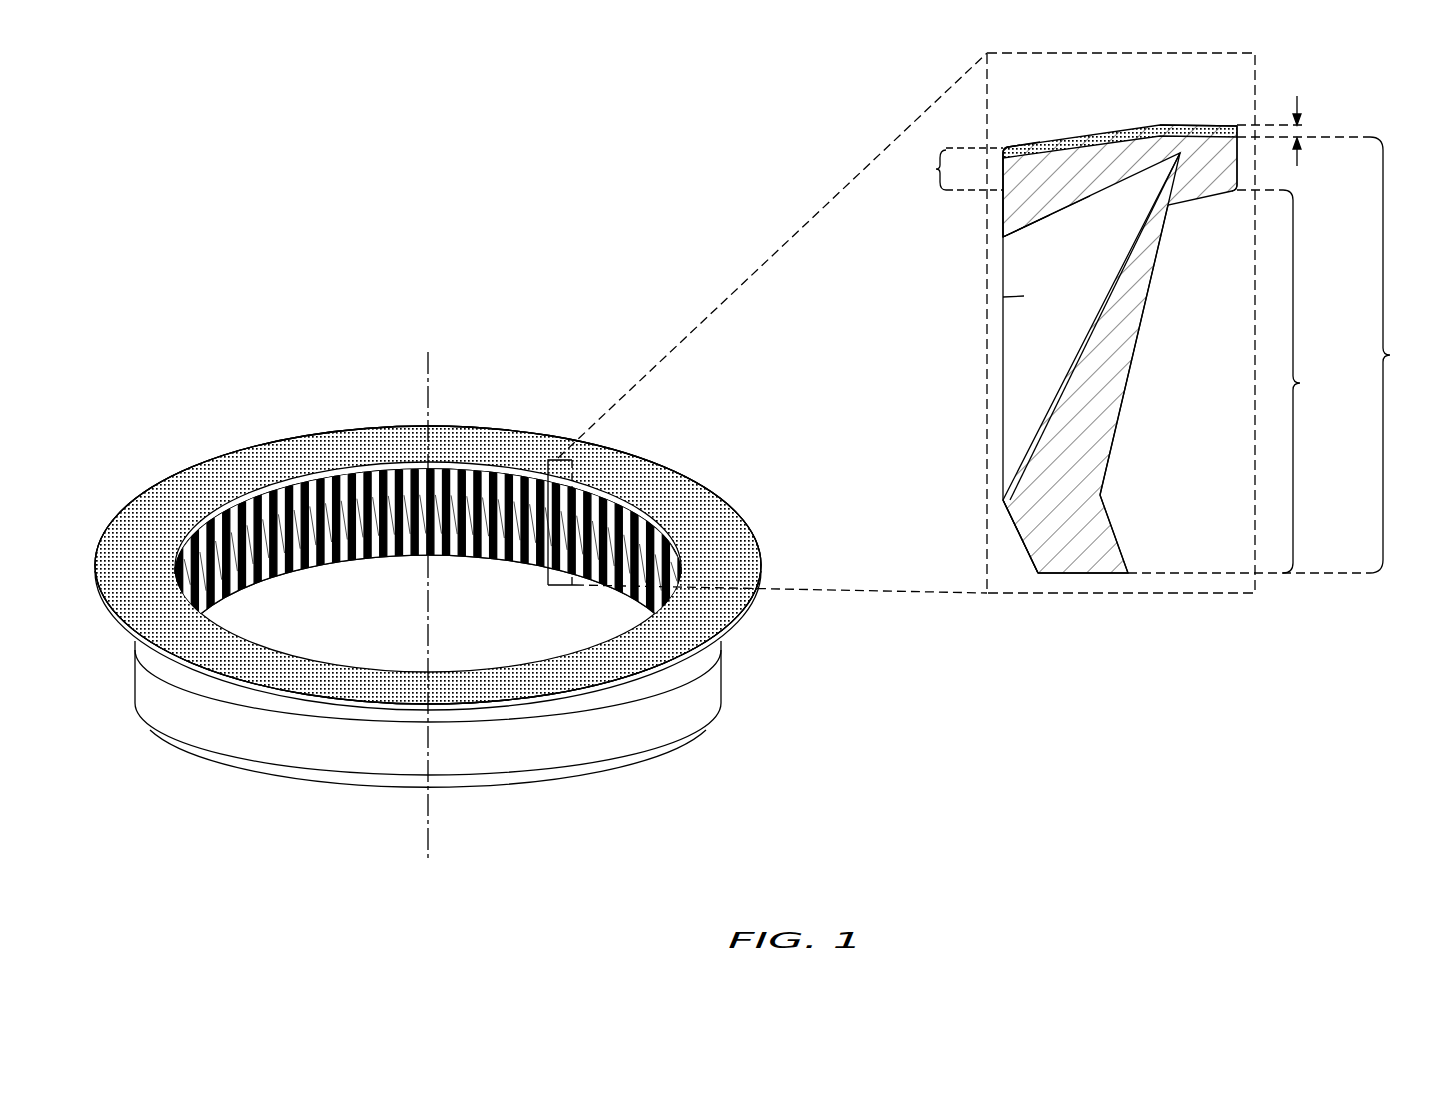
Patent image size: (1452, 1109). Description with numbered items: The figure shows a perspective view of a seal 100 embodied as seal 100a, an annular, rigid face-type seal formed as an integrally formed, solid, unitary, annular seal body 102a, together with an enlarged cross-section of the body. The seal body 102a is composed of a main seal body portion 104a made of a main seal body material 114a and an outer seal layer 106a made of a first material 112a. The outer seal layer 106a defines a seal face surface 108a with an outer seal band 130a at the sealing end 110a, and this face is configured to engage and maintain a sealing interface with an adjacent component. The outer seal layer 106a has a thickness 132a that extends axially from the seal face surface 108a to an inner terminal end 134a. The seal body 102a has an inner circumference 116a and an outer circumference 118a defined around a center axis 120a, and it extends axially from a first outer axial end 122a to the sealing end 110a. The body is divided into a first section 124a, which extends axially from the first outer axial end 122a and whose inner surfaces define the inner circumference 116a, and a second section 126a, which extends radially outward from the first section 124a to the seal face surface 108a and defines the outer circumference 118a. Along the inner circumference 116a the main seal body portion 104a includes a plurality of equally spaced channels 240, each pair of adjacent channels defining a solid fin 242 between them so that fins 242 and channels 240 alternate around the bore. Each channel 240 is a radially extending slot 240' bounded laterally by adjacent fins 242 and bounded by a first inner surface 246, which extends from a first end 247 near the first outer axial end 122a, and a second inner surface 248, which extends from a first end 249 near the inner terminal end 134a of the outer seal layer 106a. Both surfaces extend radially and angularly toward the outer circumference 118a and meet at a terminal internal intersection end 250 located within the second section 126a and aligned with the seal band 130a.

The seal 100 is at (232, 305).
The seal 100a is at (246, 370).
The annular seal body 102a is at (606, 726).
The main seal body portion 104a is at (1227, 349).
The outer seal layer 106a is at (188, 667).
The seal face surface 108a is at (232, 458).
The sealing end 110a is at (165, 500).
The first material 112a is at (1078, 143).
The main seal body material 114a is at (1080, 432).
The inner circumference 116a is at (337, 468).
The outer circumference 118a is at (764, 614).
The center axis 120a is at (436, 358).
The first outer axial end 122a is at (514, 784).
The first section 124a is at (1298, 381).
The second section 126a is at (945, 169).
The outer seal band 130a is at (1202, 125).
The thickness 132a is at (1297, 129).
The inner terminal end 134a is at (1003, 158).
The channel 240 is at (605, 479).
The slot 240' is at (970, 317).
The fin 242 is at (382, 556).
The first inner surface 246 is at (1046, 424).
The first end of the first inner surface 247 is at (1010, 500).
The second inner surface 248 is at (1003, 268).
The first end of the second inner surface 249 is at (1012, 235).
The terminal internal intersection end 250 is at (1180, 153).